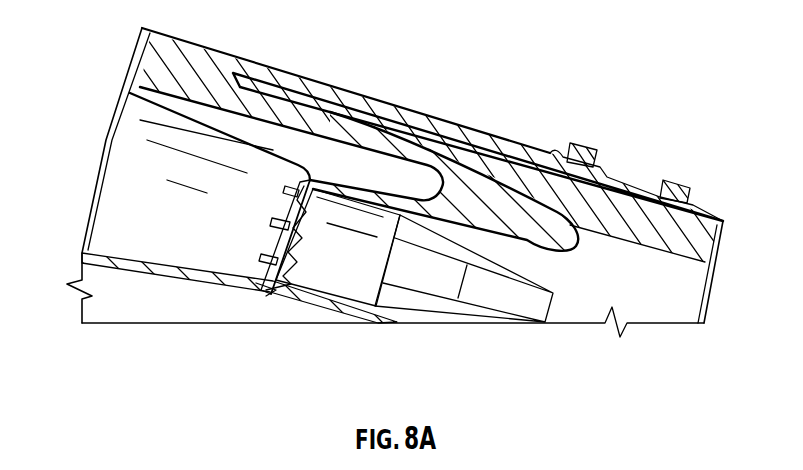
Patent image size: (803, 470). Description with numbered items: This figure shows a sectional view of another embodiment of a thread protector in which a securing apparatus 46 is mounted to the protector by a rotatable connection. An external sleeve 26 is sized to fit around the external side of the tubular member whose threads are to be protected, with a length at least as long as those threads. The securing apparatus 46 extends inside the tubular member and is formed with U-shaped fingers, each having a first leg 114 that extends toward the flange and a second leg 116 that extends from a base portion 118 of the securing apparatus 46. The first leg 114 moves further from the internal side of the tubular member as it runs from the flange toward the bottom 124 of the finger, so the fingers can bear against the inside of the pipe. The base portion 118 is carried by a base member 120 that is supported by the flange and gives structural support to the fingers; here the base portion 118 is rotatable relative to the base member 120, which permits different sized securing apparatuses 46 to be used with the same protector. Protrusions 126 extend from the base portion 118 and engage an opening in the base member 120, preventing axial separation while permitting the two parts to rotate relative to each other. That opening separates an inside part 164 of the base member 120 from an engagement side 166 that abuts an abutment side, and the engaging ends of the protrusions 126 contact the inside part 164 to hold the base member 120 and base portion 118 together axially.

The securing apparatus 46 is at (93, 104).
The first leg 114 is at (383, 135).
The external sleeve 26 is at (452, 128).
The second leg 116 is at (348, 192).
The base portion 118 is at (347, 297).
The base member 120 is at (112, 252).
The bottom 124 is at (567, 246).
The protrusions 126 is at (283, 194).
The inside part 164 is at (262, 284).
The engagement side 166 is at (245, 281).